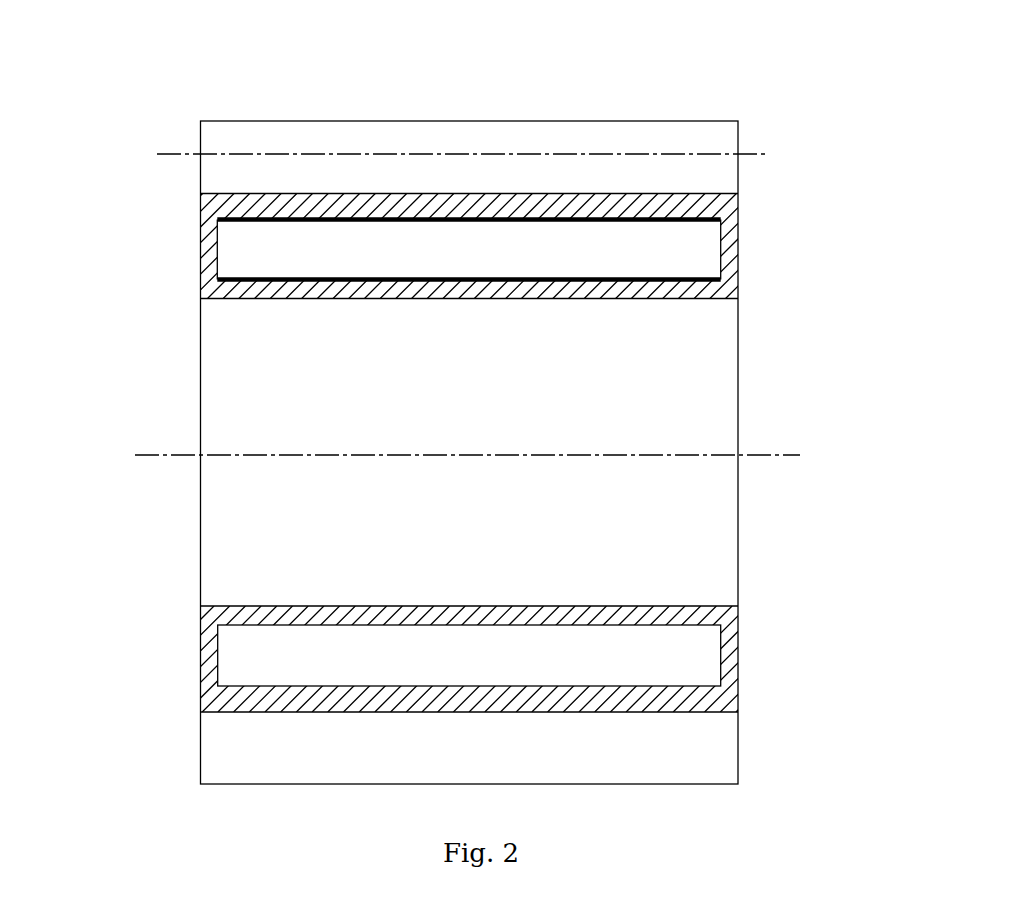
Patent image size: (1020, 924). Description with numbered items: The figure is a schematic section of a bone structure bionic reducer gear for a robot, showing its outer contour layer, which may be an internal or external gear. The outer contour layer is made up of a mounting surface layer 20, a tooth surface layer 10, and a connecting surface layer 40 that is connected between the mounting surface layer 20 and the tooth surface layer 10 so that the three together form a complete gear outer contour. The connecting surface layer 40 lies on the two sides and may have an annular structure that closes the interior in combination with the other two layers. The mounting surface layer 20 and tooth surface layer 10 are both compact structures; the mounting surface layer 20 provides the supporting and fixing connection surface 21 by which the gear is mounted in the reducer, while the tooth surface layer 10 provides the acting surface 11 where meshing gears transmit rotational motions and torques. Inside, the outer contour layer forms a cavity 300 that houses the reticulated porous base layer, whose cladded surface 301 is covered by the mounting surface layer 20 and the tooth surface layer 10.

The tooth surface layer 10 is at (685, 202).
The acting surface 11 is at (473, 133).
The mounting surface layer 20 is at (665, 292).
The supporting and fixing connection surface 21 is at (642, 299).
The connecting surface layer 40 is at (205, 248).
The cavity 300 is at (242, 237).
The cladded surface 301 is at (349, 218).